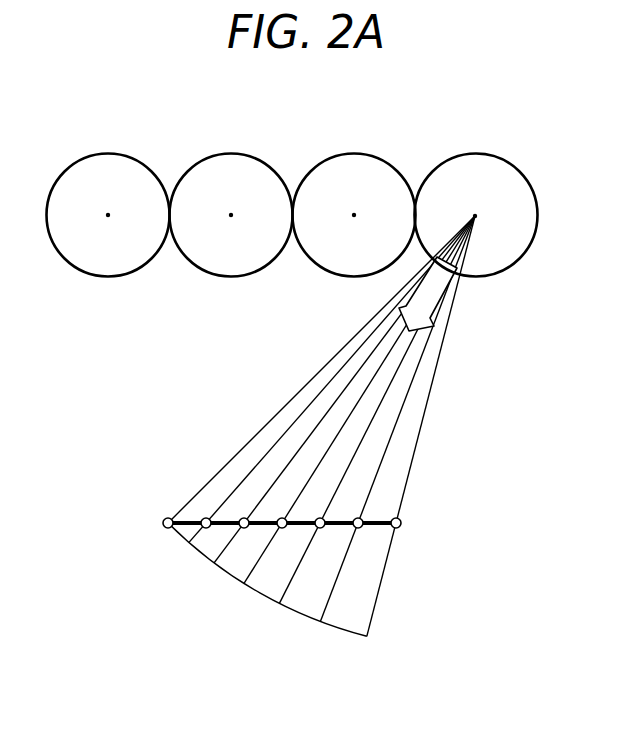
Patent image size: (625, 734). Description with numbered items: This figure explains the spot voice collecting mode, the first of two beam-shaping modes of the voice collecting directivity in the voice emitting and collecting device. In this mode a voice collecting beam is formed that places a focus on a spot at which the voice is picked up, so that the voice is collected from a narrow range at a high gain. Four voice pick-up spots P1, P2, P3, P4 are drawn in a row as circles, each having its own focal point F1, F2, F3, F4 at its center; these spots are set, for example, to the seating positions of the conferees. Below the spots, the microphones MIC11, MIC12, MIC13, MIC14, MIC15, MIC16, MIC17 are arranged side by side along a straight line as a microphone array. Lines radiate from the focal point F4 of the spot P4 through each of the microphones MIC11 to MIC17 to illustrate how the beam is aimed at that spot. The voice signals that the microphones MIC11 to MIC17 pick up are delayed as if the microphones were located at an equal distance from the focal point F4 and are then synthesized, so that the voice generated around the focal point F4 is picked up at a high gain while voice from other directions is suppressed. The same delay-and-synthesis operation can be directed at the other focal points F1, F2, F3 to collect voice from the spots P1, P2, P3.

The voice pick-up spot P1 is at (107, 153).
The voice pick-up spot P2 is at (230, 153).
The voice pick-up spot P3 is at (353, 153).
The voice pick-up spot P4 is at (475, 153).
The focal point F1 is at (108, 215).
The focal point F2 is at (231, 215).
The focal point F3 is at (354, 215).
The focal point F4 is at (475, 216).
The microphone MIC11 is at (163, 523).
The microphone MIC12 is at (204, 528).
The microphone MIC13 is at (244, 528).
The microphone MIC14 is at (281, 528).
The microphone MIC15 is at (319, 528).
The microphone MIC16 is at (358, 528).
The microphone MIC17 is at (401, 523).